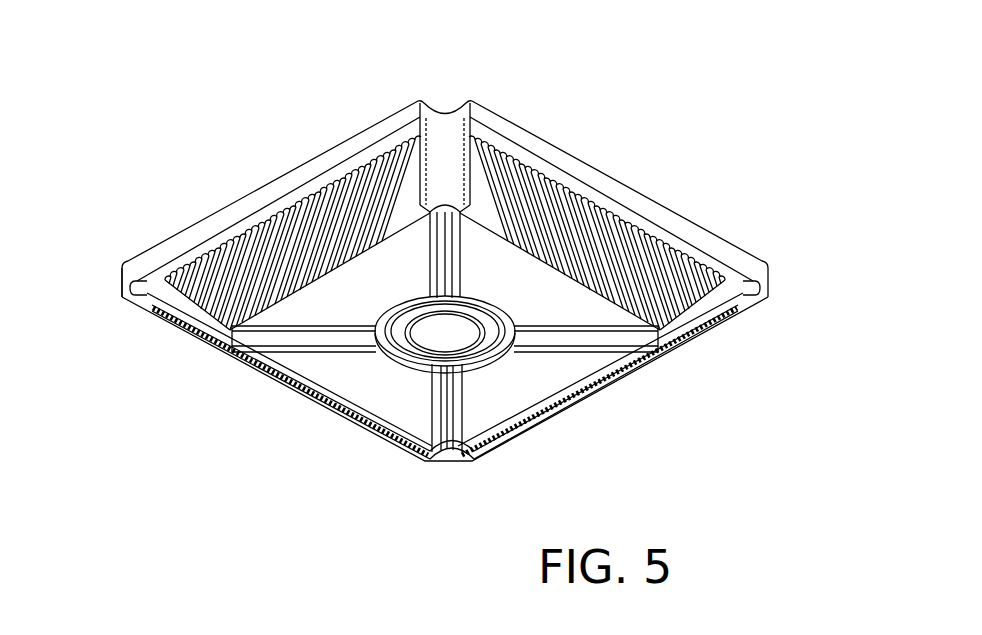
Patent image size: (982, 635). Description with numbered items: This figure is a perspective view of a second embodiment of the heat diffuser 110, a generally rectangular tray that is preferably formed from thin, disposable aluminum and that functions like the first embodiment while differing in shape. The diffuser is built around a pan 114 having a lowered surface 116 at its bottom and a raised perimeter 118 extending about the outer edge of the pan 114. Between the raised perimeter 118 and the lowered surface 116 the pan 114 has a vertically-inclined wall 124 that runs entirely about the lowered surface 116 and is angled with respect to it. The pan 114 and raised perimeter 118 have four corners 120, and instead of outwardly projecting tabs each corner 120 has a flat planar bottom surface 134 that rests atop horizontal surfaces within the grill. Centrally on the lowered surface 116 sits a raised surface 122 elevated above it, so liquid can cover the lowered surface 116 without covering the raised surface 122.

The heat diffuser 110 is at (150, 117).
The pan 114 is at (540, 292).
The lowered surface 116 is at (375, 398).
The raised perimeter 118 is at (330, 160).
The corners 120 is at (441, 105).
The raised surface 122 is at (420, 358).
The vertically-inclined wall 124 is at (300, 242).
The flat planar bottom surface 134 is at (113, 300).